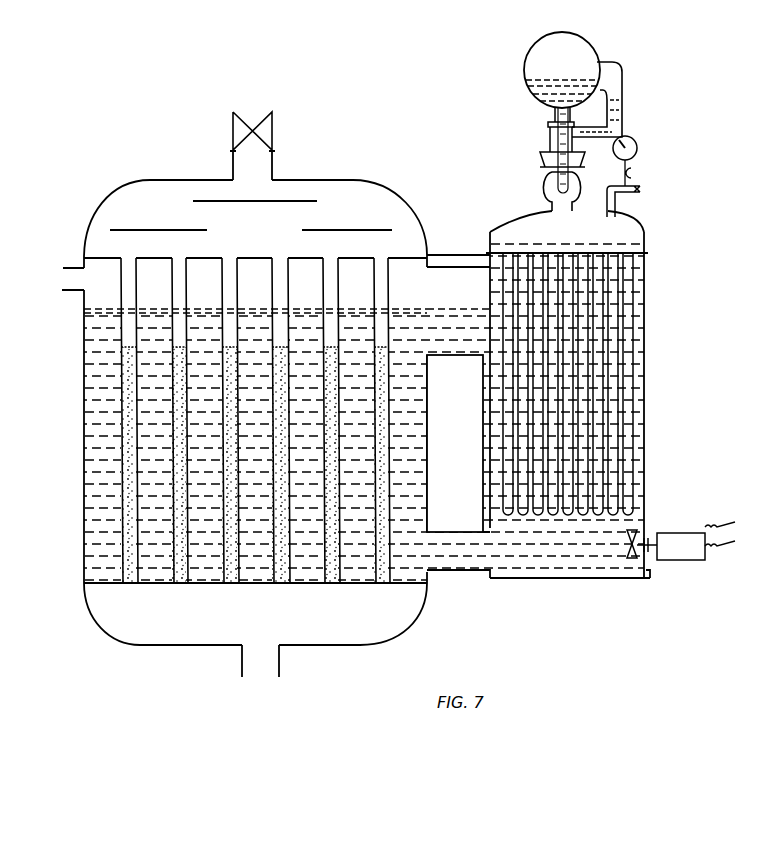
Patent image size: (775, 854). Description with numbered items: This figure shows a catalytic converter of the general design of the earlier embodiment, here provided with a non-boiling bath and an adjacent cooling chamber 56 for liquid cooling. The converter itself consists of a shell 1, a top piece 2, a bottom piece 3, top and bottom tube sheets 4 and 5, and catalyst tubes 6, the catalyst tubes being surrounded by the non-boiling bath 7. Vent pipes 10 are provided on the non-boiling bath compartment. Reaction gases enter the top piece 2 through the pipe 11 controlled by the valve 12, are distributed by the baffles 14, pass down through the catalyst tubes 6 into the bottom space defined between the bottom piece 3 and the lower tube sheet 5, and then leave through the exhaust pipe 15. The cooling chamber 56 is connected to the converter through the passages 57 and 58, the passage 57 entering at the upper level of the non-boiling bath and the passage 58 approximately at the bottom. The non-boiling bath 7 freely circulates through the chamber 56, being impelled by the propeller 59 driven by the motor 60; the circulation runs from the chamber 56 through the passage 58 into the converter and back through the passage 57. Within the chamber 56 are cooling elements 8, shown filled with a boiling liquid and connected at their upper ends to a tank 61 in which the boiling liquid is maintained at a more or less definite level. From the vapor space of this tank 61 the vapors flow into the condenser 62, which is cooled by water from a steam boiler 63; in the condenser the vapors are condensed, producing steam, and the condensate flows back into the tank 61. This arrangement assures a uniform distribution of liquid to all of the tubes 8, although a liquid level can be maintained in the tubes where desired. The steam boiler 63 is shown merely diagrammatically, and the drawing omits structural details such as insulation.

The shell 1 is at (84, 393).
The top piece 2 is at (315, 180).
The bottom piece 3 is at (170, 645).
The top tube sheet 4 is at (82, 258).
The bottom tube sheet 5 is at (84, 583).
The catalyst tubes 6 is at (128, 505).
The non-boiling bath 7 is at (95, 441).
The cooling elements 8 is at (625, 277).
The vent pipes 10 is at (70, 278).
The pipe 11 is at (272, 166).
The valve 12 is at (276, 130).
The baffles 14 is at (268, 203).
The exhaust pipe 15 is at (280, 665).
The cooling chamber 56 is at (645, 482).
The passage 57 is at (450, 262).
The passage 58 is at (470, 573).
The propeller 59 is at (632, 560).
The motor 60 is at (690, 534).
The tank 61 is at (618, 238).
The condenser 62 is at (543, 189).
The steam boiler 63 is at (587, 71).